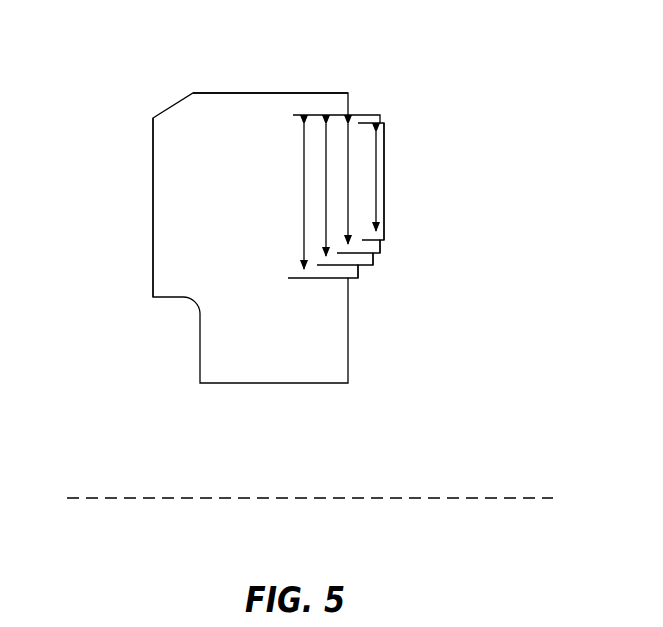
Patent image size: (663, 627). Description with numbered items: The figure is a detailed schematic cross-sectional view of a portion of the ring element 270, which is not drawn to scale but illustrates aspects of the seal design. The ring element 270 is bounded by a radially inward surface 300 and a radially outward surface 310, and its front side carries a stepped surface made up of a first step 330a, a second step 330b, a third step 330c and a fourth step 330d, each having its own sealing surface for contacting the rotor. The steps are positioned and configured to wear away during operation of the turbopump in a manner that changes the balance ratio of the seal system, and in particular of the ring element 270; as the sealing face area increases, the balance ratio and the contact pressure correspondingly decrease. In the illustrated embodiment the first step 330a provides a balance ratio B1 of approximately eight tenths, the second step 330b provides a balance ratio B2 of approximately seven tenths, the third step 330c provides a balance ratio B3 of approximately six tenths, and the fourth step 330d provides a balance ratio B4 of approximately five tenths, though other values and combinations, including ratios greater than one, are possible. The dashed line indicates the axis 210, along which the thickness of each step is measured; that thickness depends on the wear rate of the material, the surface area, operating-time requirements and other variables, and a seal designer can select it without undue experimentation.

The radially inward surface 300 is at (307, 383).
The radially outward surface 310 is at (210, 92).
The ring element 270 is at (163, 163).
The first step 330a is at (386, 217).
The second step 330b is at (381, 247).
The third step 330c is at (370, 258).
The fourth step 330d is at (357, 272).
The axis 210 is at (331, 498).
The balance ratio B1 is at (377, 167).
The balance ratio B2 is at (350, 152).
The balance ratio B3 is at (328, 140).
The balance ratio B4 is at (302, 170).